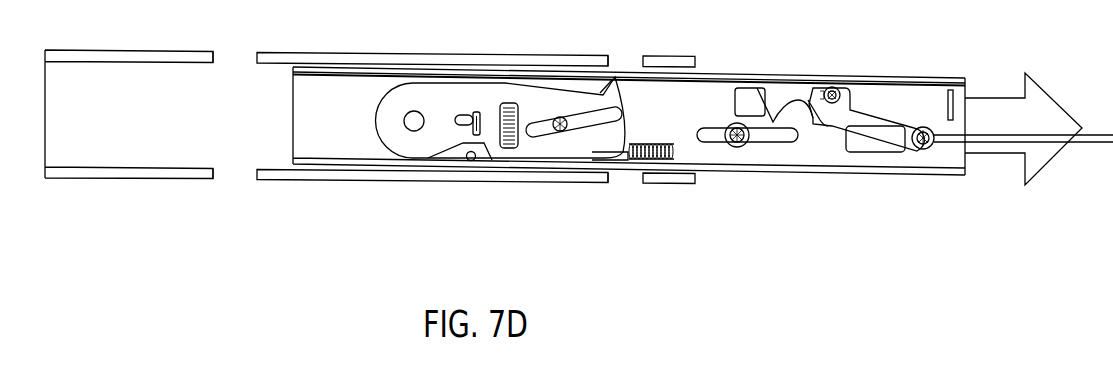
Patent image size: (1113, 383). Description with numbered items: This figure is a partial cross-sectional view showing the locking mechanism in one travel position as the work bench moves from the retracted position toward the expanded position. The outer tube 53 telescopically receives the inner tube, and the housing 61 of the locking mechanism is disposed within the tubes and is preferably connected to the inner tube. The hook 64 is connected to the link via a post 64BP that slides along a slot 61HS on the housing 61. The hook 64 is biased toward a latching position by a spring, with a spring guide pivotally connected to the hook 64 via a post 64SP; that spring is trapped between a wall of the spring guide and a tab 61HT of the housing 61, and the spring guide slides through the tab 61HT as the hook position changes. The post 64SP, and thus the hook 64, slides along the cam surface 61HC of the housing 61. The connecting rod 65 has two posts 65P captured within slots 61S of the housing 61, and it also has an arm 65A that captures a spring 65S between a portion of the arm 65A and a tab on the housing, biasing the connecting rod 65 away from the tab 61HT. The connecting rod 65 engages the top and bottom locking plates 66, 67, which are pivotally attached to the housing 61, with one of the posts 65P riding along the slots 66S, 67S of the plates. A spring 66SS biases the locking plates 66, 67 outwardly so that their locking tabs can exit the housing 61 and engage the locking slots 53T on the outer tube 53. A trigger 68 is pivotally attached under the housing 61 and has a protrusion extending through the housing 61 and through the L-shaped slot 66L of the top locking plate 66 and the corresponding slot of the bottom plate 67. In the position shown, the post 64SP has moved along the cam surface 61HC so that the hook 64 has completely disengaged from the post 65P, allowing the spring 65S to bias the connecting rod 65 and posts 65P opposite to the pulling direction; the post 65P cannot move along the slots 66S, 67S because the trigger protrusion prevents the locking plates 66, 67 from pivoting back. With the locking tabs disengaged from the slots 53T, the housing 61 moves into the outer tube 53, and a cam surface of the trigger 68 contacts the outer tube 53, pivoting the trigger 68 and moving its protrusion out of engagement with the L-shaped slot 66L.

The outer tube 53 is at (158, 152).
The locking slots 53T is at (238, 168).
The housing 61 is at (320, 93).
The top locking plate 66 is at (452, 93).
The spring 66SS is at (508, 108).
The slot 66S is at (578, 115).
The bottom locking plate 67 is at (603, 118).
The slot 67S is at (604, 92).
The posts 65P is at (558, 128).
The trigger 68 is at (482, 140).
The L-shaped slot 66L is at (467, 147).
The arm 65A is at (633, 153).
The spring 65S is at (653, 158).
The slots 61S is at (713, 140).
The connecting rod 65 is at (706, 132).
The hook 64 is at (797, 90).
The cam surface 61HC is at (807, 107).
The post 64SP is at (837, 92).
The slot 61HS is at (847, 148).
The post 64BP is at (924, 128).
The tab 61HT is at (956, 92).